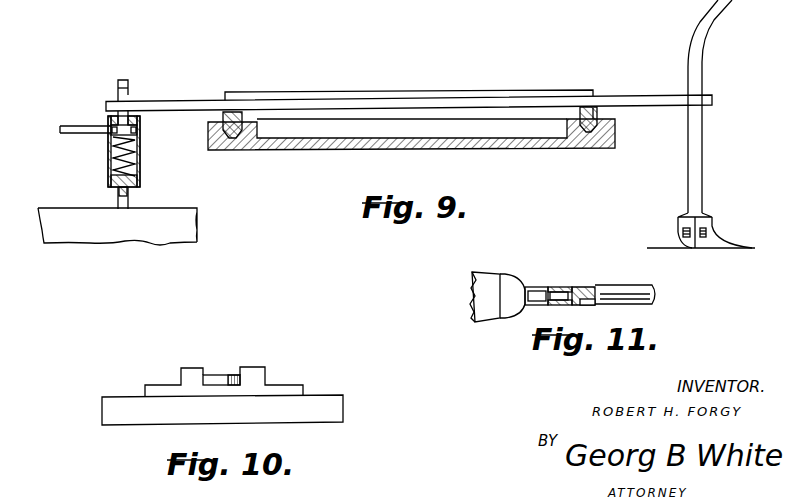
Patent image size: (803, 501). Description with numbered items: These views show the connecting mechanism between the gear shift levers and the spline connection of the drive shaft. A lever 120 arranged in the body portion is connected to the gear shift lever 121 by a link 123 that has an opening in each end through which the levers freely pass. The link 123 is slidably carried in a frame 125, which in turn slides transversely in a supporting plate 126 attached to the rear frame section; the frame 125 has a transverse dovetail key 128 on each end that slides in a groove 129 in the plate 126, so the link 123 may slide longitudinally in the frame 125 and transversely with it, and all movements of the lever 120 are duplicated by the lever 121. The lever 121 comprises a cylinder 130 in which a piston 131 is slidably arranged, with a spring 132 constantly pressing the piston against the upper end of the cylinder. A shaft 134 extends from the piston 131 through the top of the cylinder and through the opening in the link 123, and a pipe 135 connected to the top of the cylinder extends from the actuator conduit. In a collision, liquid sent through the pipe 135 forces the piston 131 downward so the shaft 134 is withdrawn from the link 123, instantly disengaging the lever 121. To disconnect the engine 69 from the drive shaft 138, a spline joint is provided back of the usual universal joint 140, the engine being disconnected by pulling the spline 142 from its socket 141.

In FIG. 9, the engine 69 is at (187, 231).
In FIG. 11, the engine 69 is at (481, 272).
In FIG. 9, the lever 120 is at (717, 17).
In FIG. 9, the gear shift lever 121 is at (131, 86).
In FIG. 9, the link 123 is at (643, 98).
In FIG. 10, the link 123 is at (222, 374).
In FIG. 9, the frame 125 is at (466, 90).
In FIG. 10, the frame 125 is at (262, 376).
In FIG. 9, the supporting plate 126 is at (530, 150).
In FIG. 10, the supporting plate 126 is at (344, 406).
In FIG. 9, the transverse dovetail key 128 is at (598, 128).
In FIG. 9, the groove 129 is at (222, 128).
In FIG. 9, the cylinder 130 is at (141, 168).
In FIG. 9, the piston 131 is at (139, 131).
In FIG. 9, the spring 132 is at (111, 180).
In FIG. 9, the shaft 134 is at (117, 91).
In FIG. 9, the pipe 135 is at (79, 137).
In FIG. 11, the drive shaft 138 is at (622, 290).
In FIG. 11, the universal joint 140 is at (567, 284).
In FIG. 11, the socket 141 is at (580, 302).
In FIG. 11, the spline 142 is at (556, 289).